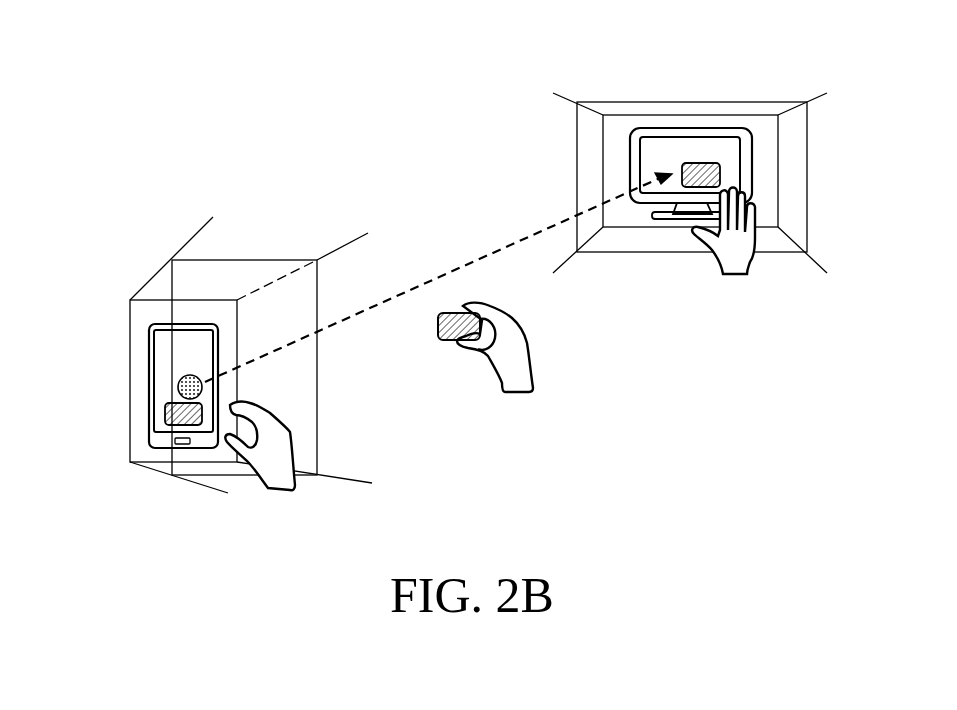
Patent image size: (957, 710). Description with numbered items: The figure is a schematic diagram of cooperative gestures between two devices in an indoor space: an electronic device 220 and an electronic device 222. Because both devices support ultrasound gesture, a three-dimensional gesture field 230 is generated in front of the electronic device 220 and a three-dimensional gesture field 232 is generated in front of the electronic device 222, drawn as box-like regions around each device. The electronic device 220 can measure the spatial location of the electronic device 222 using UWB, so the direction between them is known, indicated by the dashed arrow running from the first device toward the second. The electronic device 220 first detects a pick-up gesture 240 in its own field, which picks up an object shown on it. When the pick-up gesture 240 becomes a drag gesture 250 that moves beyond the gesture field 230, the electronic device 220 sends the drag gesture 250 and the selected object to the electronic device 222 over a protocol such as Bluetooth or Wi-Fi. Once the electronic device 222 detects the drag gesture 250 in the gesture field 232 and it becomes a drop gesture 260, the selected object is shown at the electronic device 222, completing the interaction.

The electronic device 220 is at (148, 386).
The electronic device 222 is at (690, 114).
The 3D gesture field 230 is at (173, 477).
The 3D gesture field 232 is at (633, 253).
The pick-up gesture 240 is at (283, 491).
The drag gesture 250 is at (518, 393).
The drop gesture 260 is at (737, 275).